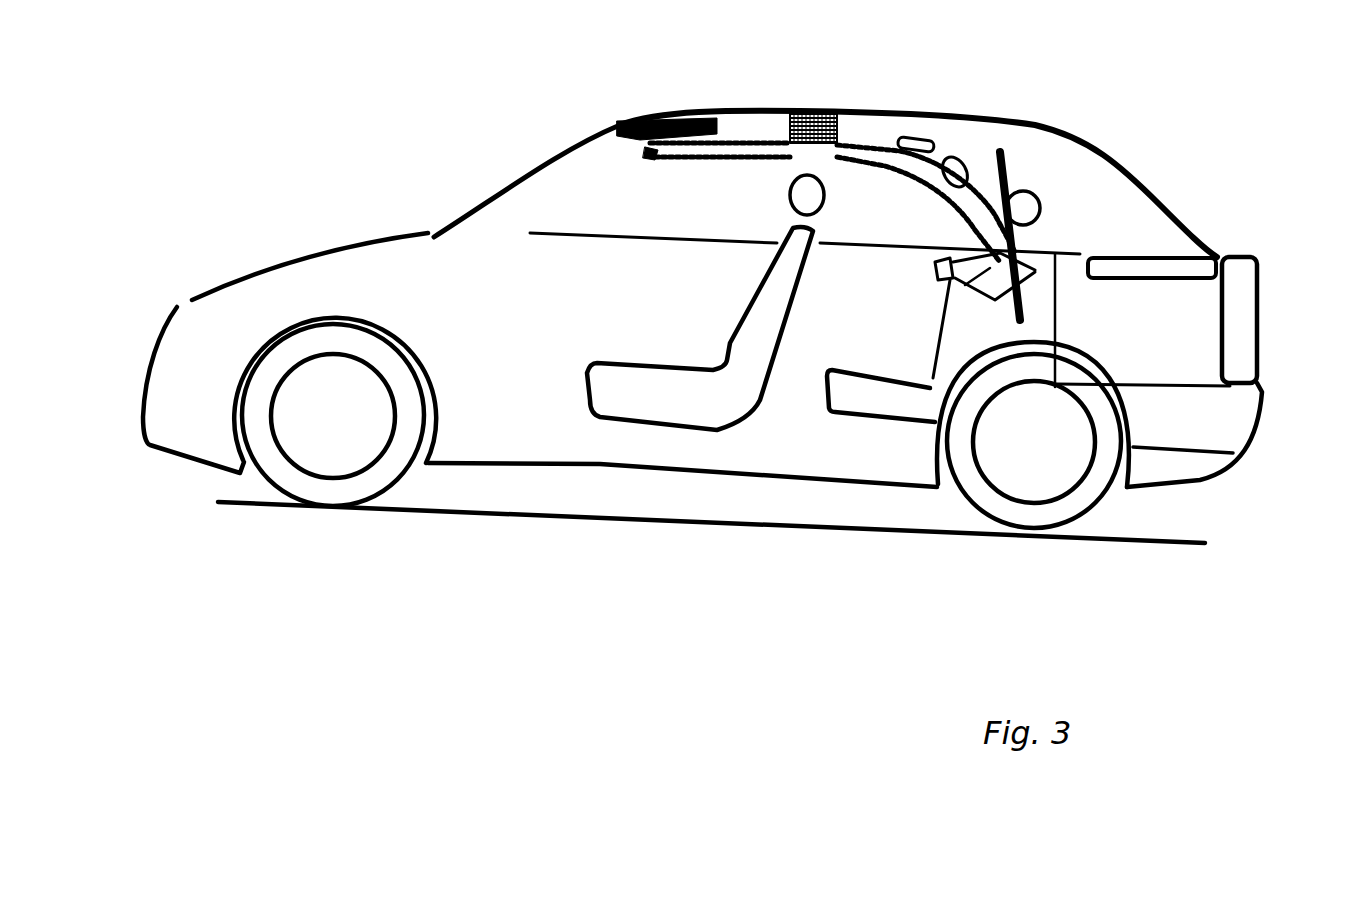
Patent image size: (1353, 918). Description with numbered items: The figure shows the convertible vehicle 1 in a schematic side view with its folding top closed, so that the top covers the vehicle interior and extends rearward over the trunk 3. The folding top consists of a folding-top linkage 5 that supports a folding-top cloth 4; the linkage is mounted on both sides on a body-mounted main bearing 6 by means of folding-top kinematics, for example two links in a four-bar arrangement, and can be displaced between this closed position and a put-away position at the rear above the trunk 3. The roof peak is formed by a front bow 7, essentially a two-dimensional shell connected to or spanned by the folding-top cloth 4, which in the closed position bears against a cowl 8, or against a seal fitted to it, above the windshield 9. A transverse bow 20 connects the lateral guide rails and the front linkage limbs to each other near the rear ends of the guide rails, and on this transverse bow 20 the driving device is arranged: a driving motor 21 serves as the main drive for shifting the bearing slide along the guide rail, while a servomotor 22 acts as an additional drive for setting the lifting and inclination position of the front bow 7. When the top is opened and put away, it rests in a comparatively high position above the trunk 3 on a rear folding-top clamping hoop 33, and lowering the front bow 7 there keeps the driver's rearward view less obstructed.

The convertible vehicle 1 is at (372, 192).
The trunk 3 is at (1167, 328).
The folding-top cloth 4 is at (1037, 127).
The folding-top linkage 5 is at (967, 160).
The main bearing 6 is at (1010, 243).
The front bow 7 is at (690, 112).
The cowl 8 is at (625, 118).
The windshield 9 is at (508, 177).
The transverse bow 20 is at (813, 112).
The driving motor 21 is at (905, 99).
The servomotor 22 is at (934, 164).
The rear folding-top clamping hoop 33 is at (1170, 266).